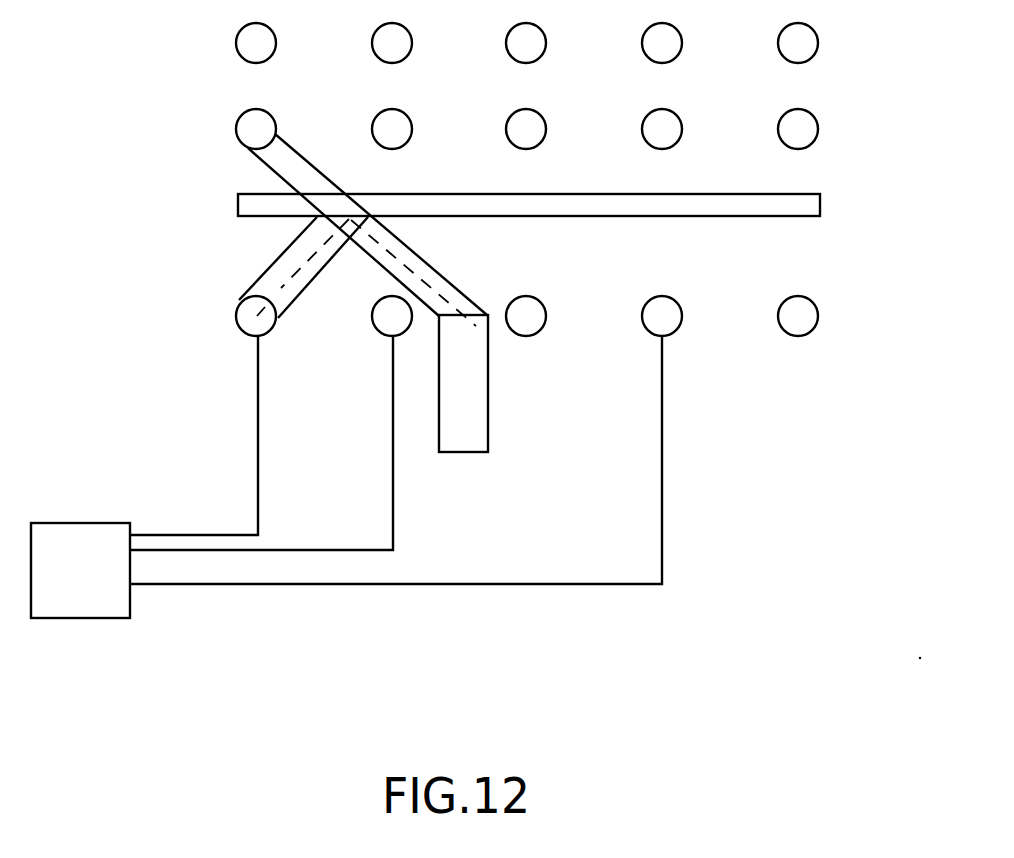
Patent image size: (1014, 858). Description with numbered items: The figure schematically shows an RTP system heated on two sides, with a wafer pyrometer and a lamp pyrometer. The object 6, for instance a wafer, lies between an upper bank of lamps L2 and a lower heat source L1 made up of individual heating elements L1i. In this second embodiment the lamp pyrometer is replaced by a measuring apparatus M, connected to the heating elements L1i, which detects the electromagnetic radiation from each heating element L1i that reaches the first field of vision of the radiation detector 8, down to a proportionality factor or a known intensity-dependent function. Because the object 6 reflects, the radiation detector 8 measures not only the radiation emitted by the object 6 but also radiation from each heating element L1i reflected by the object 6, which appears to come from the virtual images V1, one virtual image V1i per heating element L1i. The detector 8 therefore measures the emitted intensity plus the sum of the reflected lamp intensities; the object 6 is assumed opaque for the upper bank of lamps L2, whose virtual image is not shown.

The object 6 is at (820, 194).
The radiation detector 8 is at (477, 402).
The heat source L1 is at (626, 316).
The upper bank of lamps L2 is at (550, 43).
The virtual images V1 is at (619, 129).
The virtual image V1i is at (234, 117).
The heating element L1i is at (235, 326).
The measuring apparatus M is at (346, 477).